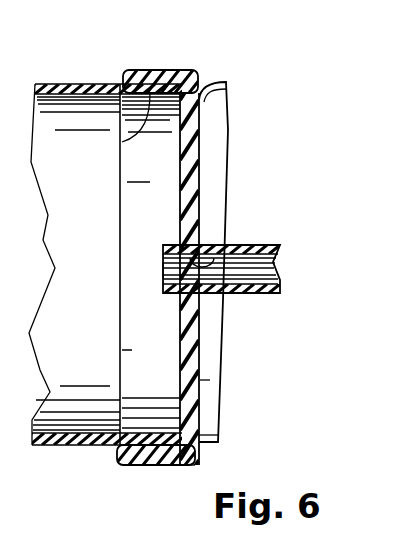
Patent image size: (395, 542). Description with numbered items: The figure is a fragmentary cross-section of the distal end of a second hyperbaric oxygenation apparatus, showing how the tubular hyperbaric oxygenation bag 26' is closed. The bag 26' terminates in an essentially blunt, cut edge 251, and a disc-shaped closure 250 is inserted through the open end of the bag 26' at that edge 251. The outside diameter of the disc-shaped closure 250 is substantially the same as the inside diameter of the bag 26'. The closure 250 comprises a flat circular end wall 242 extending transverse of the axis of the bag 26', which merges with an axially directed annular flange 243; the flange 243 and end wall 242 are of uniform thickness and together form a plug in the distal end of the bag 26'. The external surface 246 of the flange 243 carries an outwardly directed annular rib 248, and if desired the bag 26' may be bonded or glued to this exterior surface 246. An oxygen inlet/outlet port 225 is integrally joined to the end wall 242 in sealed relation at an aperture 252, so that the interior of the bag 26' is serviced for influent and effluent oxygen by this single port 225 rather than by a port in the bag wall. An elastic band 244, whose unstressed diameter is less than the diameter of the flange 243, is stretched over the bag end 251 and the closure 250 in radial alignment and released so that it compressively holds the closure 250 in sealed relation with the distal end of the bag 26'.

The hyperbaric oxygenation bag 26' is at (104, 234).
The elastic band 244 is at (152, 70).
The annular flange 243 is at (123, 149).
The end wall 242 is at (200, 195).
The cut edge 251 is at (228, 140).
The aperture 252 is at (226, 245).
The oxygen inlet/outlet port 225 is at (163, 272).
The disc-shaped closure 250 is at (202, 380).
The external surface of flange 246 is at (172, 469).
The annular rib 248 is at (138, 466).